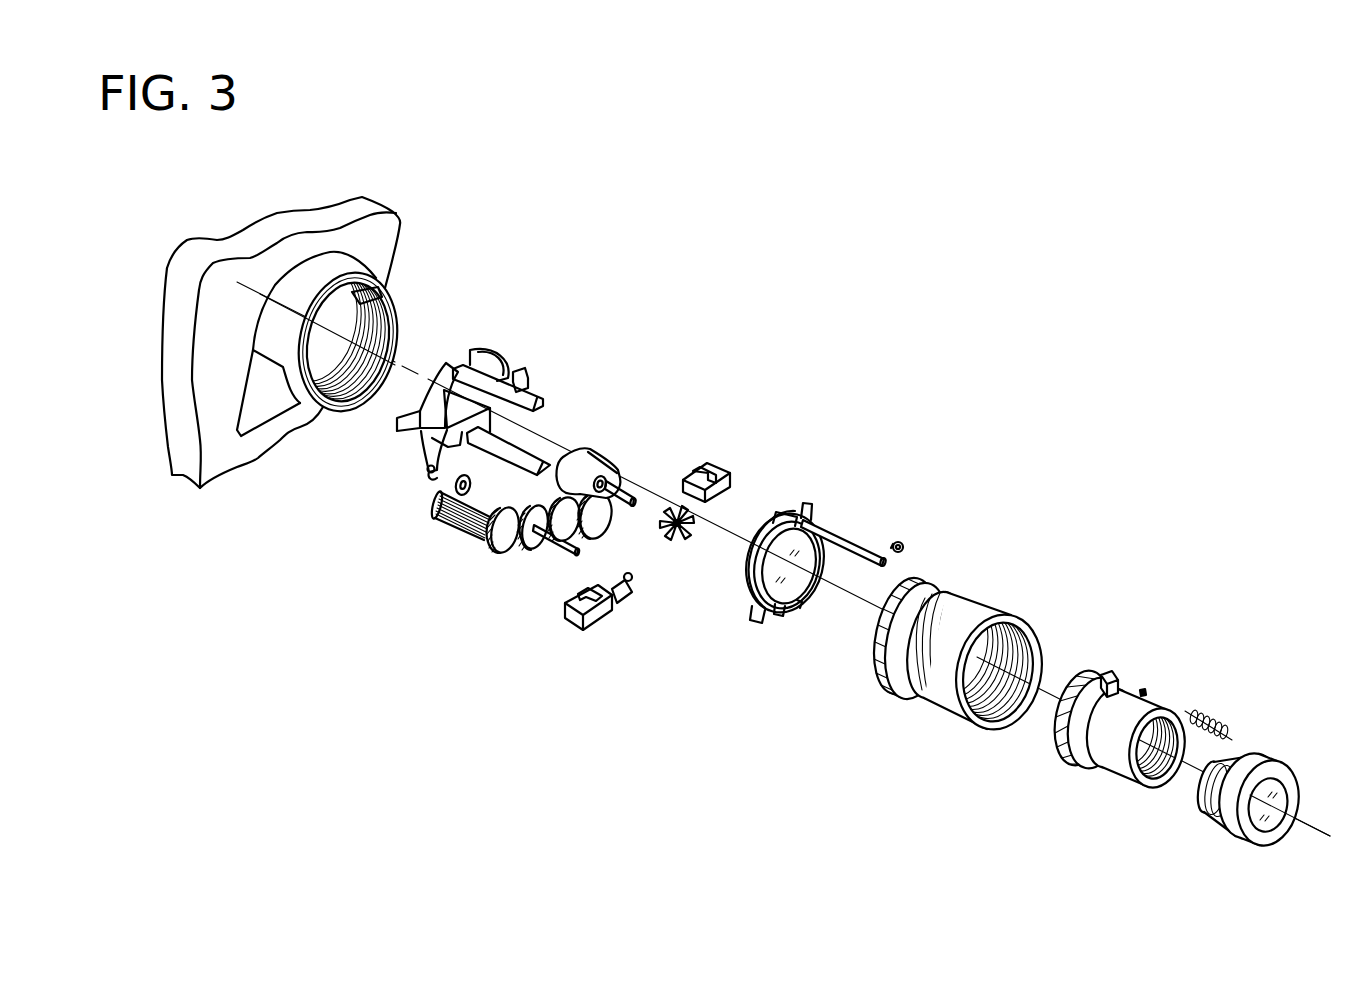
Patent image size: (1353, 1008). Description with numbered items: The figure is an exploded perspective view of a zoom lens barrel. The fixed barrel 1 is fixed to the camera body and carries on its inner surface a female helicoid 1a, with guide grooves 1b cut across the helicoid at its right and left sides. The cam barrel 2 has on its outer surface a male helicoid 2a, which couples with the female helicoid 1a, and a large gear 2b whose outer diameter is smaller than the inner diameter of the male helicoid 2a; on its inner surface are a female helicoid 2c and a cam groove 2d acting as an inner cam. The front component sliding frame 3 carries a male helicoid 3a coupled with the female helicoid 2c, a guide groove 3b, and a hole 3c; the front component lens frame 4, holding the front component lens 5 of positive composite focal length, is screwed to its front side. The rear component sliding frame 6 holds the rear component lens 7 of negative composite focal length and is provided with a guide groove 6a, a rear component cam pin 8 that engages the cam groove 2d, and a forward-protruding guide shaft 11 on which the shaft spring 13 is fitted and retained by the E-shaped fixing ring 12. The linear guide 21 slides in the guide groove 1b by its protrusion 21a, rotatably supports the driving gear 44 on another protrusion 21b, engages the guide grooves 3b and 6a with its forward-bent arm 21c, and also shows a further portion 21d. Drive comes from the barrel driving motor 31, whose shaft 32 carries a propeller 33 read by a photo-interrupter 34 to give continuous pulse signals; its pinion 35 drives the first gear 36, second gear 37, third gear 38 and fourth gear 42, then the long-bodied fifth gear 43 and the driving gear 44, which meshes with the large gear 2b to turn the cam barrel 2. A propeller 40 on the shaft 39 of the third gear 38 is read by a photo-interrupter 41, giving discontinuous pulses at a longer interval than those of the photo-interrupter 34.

The fixed barrel 1 is at (342, 262).
The female helicoid 1a is at (375, 343).
The guide grooves 1b is at (382, 300).
The linear guide 21 is at (506, 360).
The protrusion 21a is at (535, 380).
The protrusion 21b is at (430, 476).
The arm 21c is at (541, 402).
The arm portion 21d is at (425, 446).
The barrel driving motor 31 is at (600, 452).
The shaft 32 is at (622, 490).
The propeller 33 is at (686, 536).
The photo-interrupter 34 is at (714, 466).
The pinion 35 is at (609, 480).
The first gear 36 is at (607, 520).
The second gear 37 is at (595, 530).
The third gear 38 is at (537, 552).
The shaft 39 is at (562, 550).
The propeller 40 is at (628, 598).
The photo-interrupter 41 is at (596, 630).
The fourth gear 42 is at (505, 556).
The worm shaft 43 is at (467, 532).
The driving gear 44 is at (472, 487).
The rear component sliding frame 6 is at (788, 512).
The guide groove 6a is at (772, 518).
The rear component lens 7 is at (775, 604).
The rear component cam pin 8 is at (808, 506).
The guide shaft 11 is at (846, 540).
The E-shaped fixing ring 12 is at (898, 542).
The cam barrel 2 is at (972, 627).
The male helicoid 2a is at (958, 586).
The large gear 2b is at (928, 580).
The female helicoid 2c is at (1042, 652).
The cam groove 2d is at (1012, 640).
The front component sliding frame 3 is at (1121, 707).
The male helicoid 3a is at (1097, 672).
The guide groove 3b is at (1116, 688).
The hole 3c is at (1146, 690).
The shaft spring 13 is at (1210, 716).
The front component lens frame 4 is at (1265, 766).
The front component lens 5 is at (1282, 786).